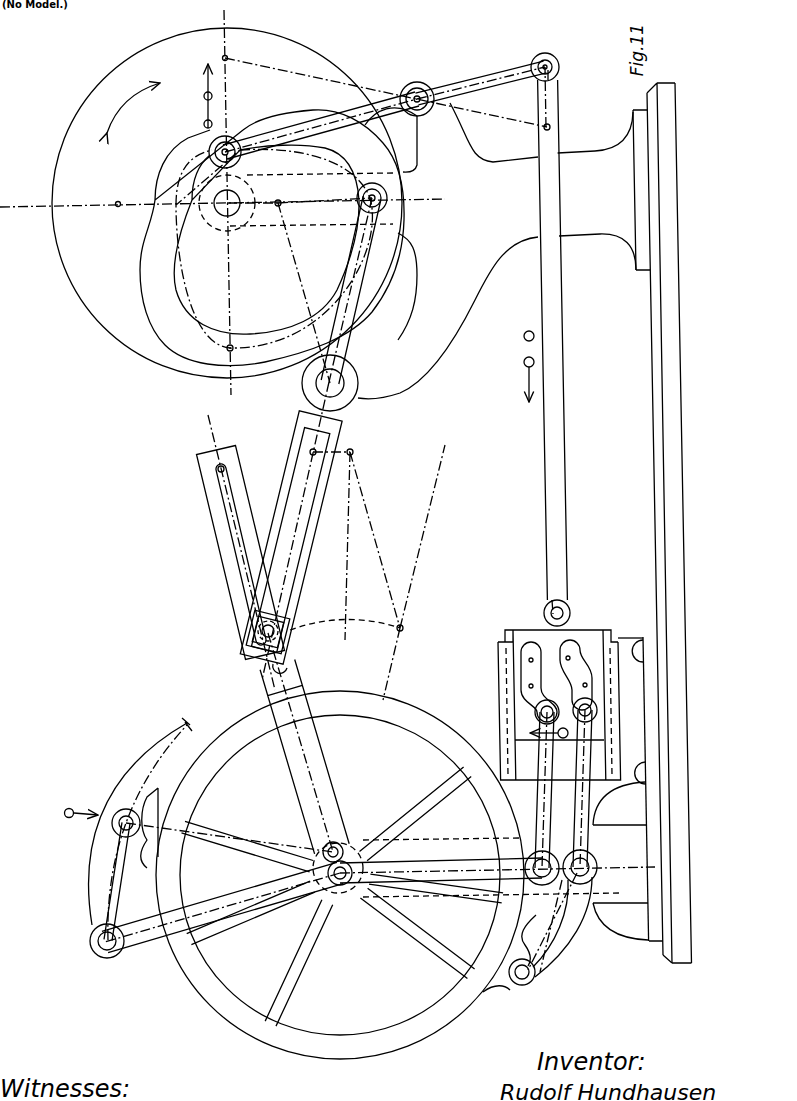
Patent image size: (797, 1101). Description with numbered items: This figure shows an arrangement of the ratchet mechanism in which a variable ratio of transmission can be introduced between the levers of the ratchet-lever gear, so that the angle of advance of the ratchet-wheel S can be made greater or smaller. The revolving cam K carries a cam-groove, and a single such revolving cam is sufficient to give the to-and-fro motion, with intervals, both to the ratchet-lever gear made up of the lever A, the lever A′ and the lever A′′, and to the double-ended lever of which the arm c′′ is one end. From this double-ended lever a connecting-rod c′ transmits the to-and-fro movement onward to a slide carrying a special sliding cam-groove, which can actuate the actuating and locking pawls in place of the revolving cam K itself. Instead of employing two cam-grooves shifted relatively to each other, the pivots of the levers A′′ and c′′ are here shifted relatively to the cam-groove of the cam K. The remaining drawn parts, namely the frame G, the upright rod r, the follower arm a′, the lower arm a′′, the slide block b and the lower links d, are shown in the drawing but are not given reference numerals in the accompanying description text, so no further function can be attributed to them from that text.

The revolving cam K is at (222, 202).
The frame G is at (525, 523).
The double-ended lever c′′ is at (376, 106).
The connecting-rod c′ is at (484, 82).
The upright rod r is at (557, 354).
The cam follower arm a′ is at (348, 318).
The lever A′ is at (342, 618).
The lever A′′ is at (254, 633).
The ratchet-wheel S is at (220, 757).
The lever of the ratchet-lever gear A is at (463, 872).
The lower arm a′′ is at (203, 907).
The slide block with cam slots b is at (559, 690).
The lower connecting links d is at (562, 910).